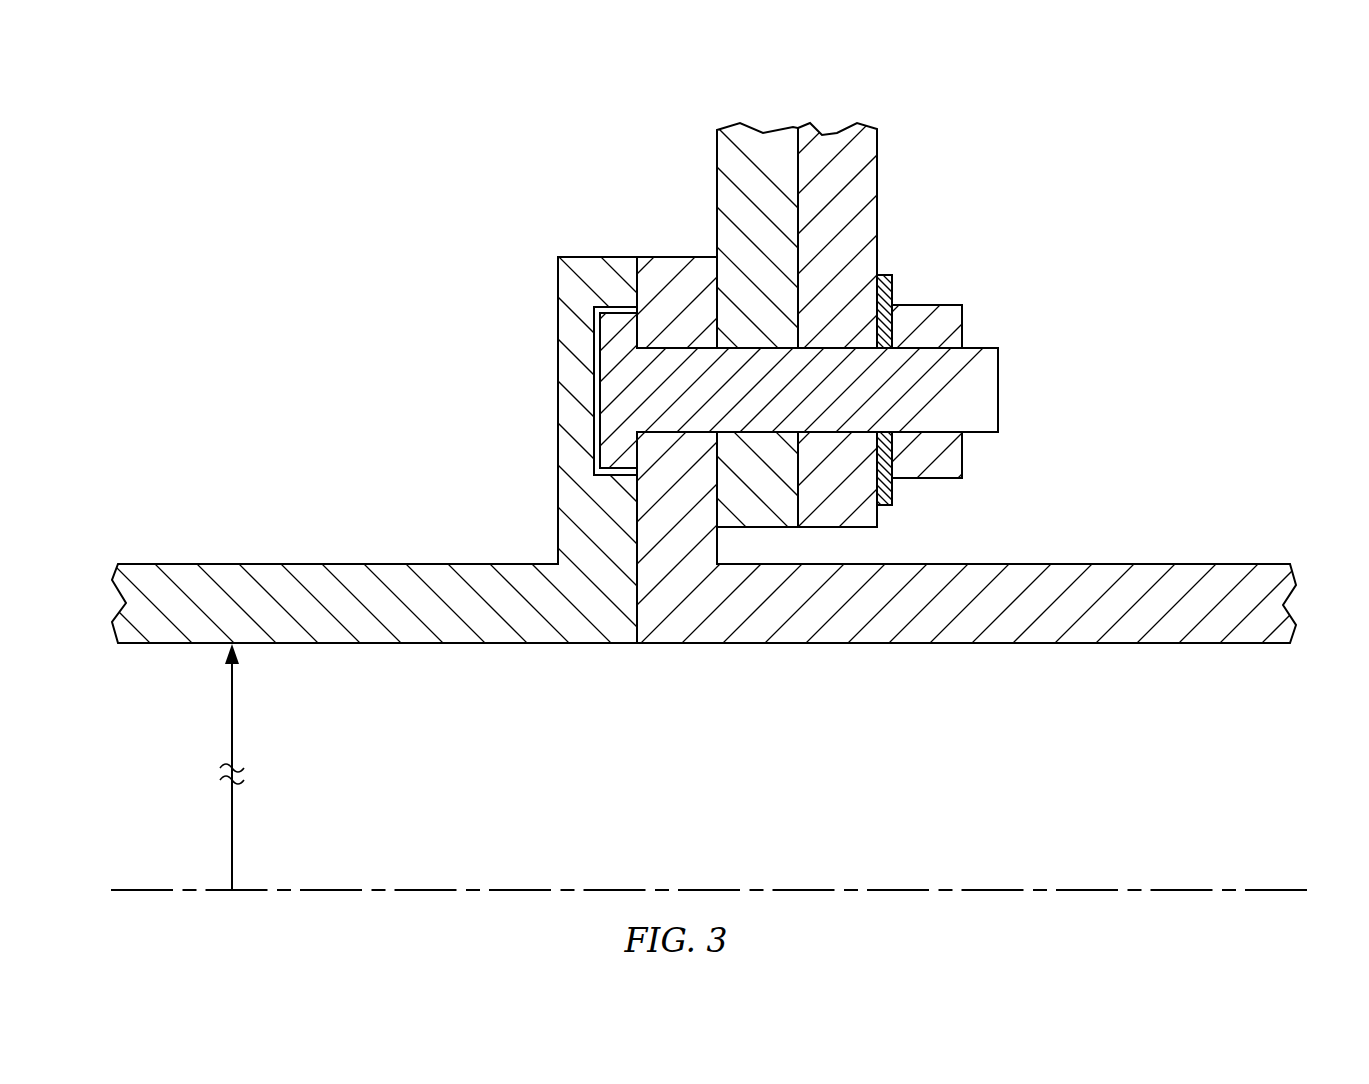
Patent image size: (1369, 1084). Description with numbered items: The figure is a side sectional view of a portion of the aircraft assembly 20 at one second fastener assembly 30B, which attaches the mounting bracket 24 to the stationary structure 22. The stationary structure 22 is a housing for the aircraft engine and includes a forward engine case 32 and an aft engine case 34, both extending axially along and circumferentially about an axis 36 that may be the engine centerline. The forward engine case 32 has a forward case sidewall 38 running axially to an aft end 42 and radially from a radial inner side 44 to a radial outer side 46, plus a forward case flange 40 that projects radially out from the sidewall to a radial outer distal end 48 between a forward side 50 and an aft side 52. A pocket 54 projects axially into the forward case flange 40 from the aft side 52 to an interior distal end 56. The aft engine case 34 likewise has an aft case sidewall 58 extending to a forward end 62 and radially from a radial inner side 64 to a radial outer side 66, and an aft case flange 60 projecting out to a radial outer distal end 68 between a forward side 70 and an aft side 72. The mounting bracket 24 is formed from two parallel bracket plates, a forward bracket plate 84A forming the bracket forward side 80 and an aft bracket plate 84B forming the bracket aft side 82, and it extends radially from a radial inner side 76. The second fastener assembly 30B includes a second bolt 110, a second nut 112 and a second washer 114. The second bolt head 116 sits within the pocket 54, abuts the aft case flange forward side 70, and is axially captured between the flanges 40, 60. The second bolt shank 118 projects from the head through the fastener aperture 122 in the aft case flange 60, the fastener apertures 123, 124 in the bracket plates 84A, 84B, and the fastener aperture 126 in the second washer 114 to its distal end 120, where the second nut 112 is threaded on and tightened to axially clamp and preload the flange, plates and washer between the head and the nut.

The assembly 20 is at (1213, 113).
The stationary structure 22 is at (1148, 506).
The mounting bracket 24 is at (893, 125).
The second fastener assembly 30B is at (1046, 385).
The forward engine case 32 is at (267, 546).
The aft engine case 34 is at (1198, 545).
The axis 36 is at (125, 885).
The forward case sidewall 38 is at (128, 600).
The forward case flange 40 is at (580, 517).
The aft end 42 is at (640, 632).
The radial inner side 44 is at (140, 648).
The radial outer side 46 is at (150, 563).
The radial outer distal end 48 is at (580, 257).
The forward side 50 is at (557, 270).
The aft side 52 is at (640, 283).
The pocket 54 is at (594, 468).
The interior distal end 56 is at (600, 355).
The aft case sidewall 58 is at (1290, 607).
The aft case flange 60 is at (705, 549).
The forward end 62 is at (637, 630).
The radial inner side 64 is at (1250, 650).
The radial outer side 66 is at (1262, 563).
The radial outer distal end 68 is at (683, 257).
The forward side 70 is at (637, 298).
The aft side 72 is at (717, 281).
The radial inner side 76 is at (833, 528).
The forward side 80 is at (717, 138).
The aft side 82 is at (877, 155).
The forward bracket plate 84A is at (760, 143).
The aft bracket plate 84B is at (833, 140).
The second bolt 110 is at (590, 425).
The second nut 112 is at (939, 297).
The second washer 114 is at (887, 267).
The second bolt head 116 is at (594, 345).
The second bolt shank 118 is at (990, 366).
The longitudinal distal end 120 is at (1000, 413).
The fastener aperture 122 is at (673, 436).
The fastener aperture 123 is at (762, 436).
The fastener aperture 124 is at (838, 436).
The fastener aperture 126 is at (887, 470).